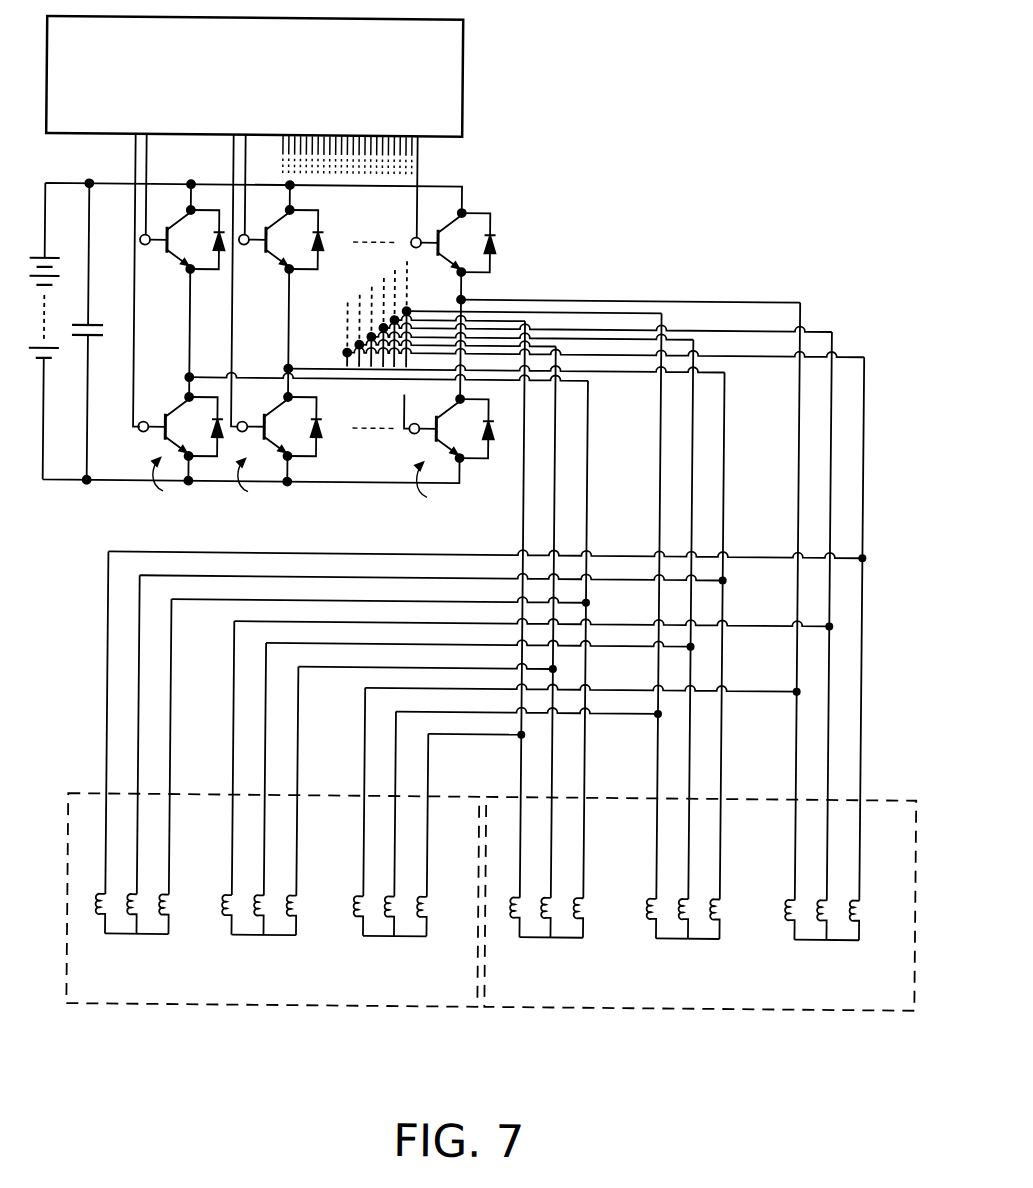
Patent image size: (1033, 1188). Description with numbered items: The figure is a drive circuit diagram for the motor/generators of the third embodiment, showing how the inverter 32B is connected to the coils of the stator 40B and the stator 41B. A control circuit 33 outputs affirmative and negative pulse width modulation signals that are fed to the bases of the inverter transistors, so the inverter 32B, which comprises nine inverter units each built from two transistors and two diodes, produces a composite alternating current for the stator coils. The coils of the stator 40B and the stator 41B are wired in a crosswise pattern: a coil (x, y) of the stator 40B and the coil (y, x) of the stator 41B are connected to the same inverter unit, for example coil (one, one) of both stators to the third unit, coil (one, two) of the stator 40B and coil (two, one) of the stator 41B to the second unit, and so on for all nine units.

The control circuit 33 is at (461, 35).
The inverter 32B is at (486, 187).
The stator 40B is at (141, 1007).
The stator 41B is at (567, 1009).